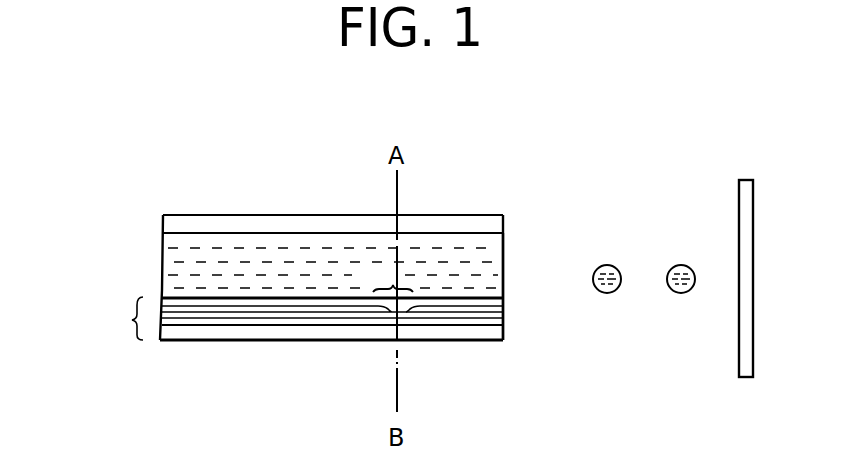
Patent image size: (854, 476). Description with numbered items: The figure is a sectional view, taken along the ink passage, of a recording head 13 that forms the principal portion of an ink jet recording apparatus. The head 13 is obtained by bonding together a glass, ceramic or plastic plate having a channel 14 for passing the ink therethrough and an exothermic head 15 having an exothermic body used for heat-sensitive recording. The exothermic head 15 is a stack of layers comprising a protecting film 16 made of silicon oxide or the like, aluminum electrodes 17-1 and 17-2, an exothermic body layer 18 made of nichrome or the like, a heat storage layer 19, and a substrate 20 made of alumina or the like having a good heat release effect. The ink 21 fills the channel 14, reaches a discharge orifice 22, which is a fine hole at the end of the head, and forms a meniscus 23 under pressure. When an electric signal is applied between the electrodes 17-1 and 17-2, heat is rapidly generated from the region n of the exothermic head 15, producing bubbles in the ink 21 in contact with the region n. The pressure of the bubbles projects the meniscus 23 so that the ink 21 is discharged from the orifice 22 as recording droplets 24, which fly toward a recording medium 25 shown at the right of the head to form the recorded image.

The head 13 is at (258, 215).
The channel 14 is at (333, 233).
The exothermic head 15 is at (118, 318).
The protecting film 16 is at (197, 302).
The aluminum electrode 17-1 is at (237, 310).
The aluminum electrode 17-2 is at (485, 308).
The exothermic body layer 18 is at (297, 318).
The heat storage layer 19 is at (350, 325).
The substrate 20 is at (437, 340).
The ink 21 is at (190, 242).
The discharge orifice 22 is at (512, 297).
The meniscus 23 is at (504, 273).
The recording droplets 24 is at (693, 251).
The recording medium 25 is at (738, 212).
The region n is at (392, 277).